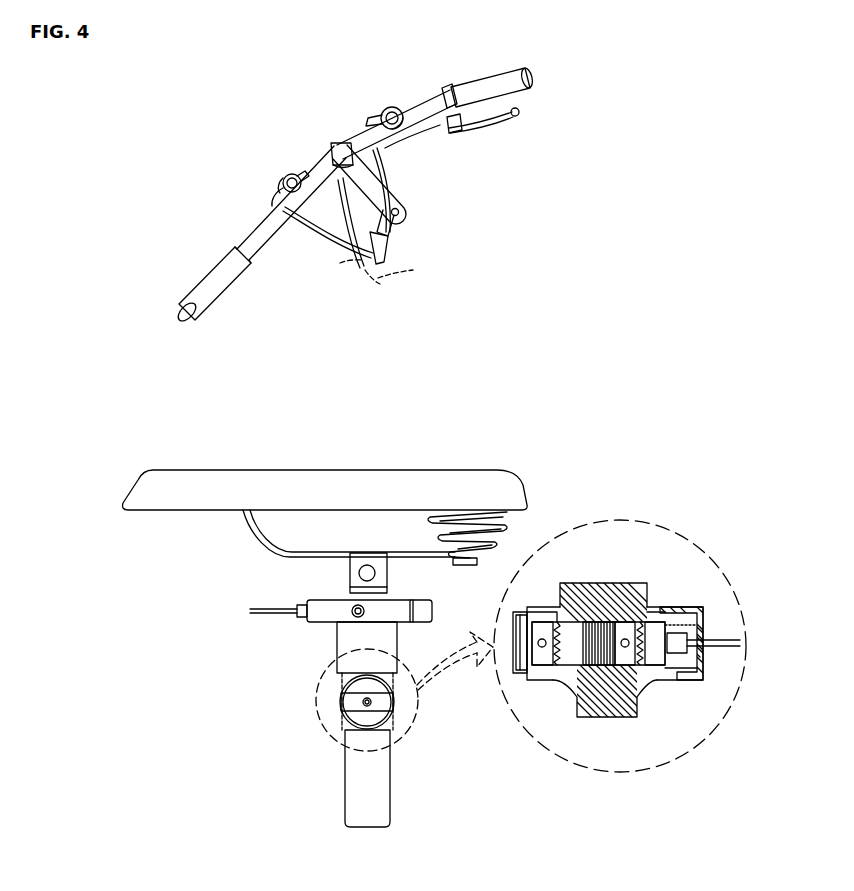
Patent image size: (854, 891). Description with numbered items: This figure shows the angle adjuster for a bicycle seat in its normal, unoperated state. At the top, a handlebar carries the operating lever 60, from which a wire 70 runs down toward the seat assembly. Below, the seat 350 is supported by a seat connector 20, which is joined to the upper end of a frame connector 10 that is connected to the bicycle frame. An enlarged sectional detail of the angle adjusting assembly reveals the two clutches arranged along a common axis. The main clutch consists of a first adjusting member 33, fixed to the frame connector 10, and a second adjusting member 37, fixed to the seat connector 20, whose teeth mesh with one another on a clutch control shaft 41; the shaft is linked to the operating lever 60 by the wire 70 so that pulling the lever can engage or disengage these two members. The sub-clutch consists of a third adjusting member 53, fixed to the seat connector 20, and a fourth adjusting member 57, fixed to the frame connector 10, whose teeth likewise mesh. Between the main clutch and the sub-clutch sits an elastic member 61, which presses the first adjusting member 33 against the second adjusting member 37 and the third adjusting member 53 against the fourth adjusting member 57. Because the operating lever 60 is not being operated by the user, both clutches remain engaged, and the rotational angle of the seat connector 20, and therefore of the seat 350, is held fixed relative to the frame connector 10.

The frame connector 10 is at (350, 793).
The seat connector 20 is at (340, 645).
The first adjusting member 33 is at (527, 670).
The second adjusting member 37 is at (570, 653).
The clutch control shaft 41 is at (687, 677).
The third adjusting member 53 is at (633, 617).
The fourth adjusting member 57 is at (657, 617).
The operating lever 60 is at (390, 110).
The elastic member 61 is at (630, 665).
The wire 70 is at (388, 177).
The seat 350 is at (460, 478).